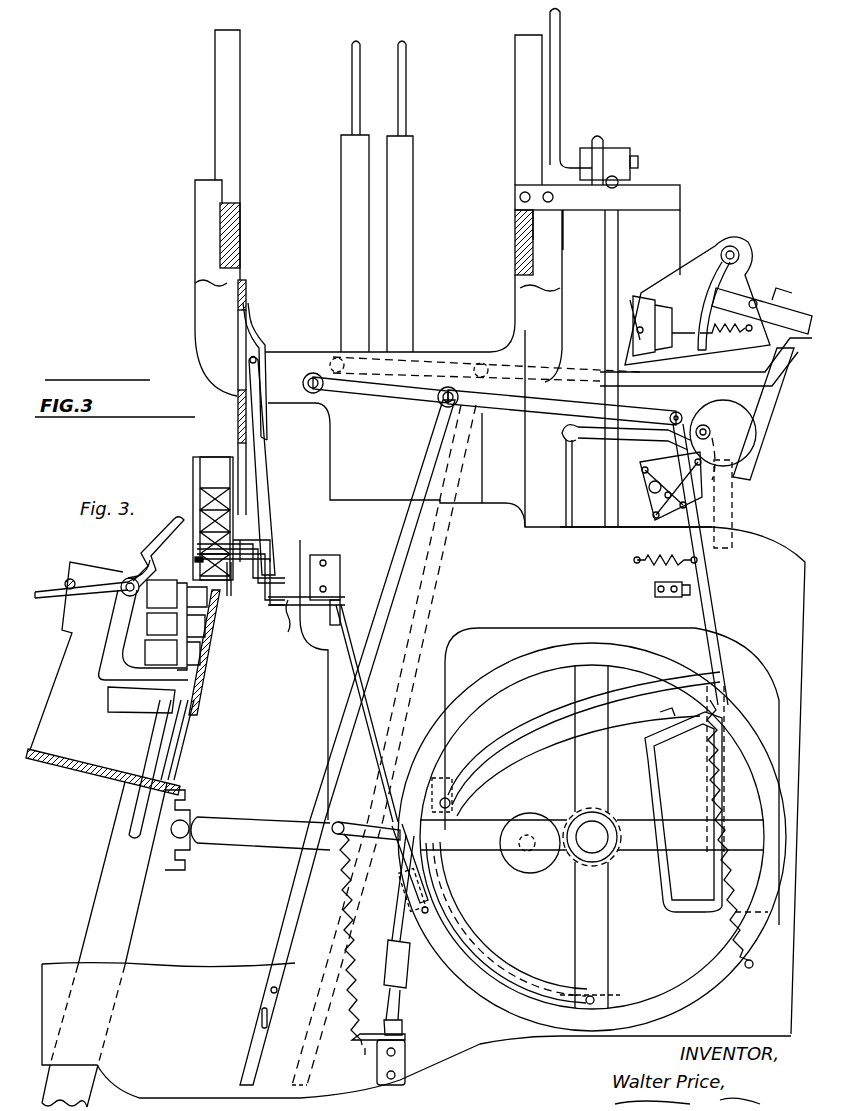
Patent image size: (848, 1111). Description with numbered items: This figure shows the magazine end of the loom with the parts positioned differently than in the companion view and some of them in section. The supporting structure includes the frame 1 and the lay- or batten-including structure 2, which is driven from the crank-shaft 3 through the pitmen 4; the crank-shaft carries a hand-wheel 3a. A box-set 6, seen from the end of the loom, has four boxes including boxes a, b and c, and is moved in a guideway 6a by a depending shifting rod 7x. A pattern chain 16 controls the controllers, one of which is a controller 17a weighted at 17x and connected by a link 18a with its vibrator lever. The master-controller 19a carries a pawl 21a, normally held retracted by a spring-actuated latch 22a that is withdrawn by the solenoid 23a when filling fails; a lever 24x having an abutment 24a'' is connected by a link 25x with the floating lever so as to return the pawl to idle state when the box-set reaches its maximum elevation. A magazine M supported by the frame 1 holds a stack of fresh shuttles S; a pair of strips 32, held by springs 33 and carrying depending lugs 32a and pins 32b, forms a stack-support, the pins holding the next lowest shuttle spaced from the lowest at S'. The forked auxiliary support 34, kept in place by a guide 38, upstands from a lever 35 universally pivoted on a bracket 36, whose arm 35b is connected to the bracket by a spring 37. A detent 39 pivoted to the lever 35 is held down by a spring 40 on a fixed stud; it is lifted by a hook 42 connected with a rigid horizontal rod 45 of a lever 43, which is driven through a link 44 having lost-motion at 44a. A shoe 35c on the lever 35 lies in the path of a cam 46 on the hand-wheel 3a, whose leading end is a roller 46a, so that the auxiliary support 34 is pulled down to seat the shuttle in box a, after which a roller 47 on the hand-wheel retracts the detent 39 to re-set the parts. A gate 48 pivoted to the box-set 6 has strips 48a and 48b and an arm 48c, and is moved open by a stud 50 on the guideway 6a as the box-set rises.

The frame 1 is at (328, 688).
The lay- or batten-including structure 2 is at (137, 918).
The crank-shaft 3 is at (606, 850).
The hand-wheel 3a is at (656, 995).
The pitmen 4 is at (260, 828).
The box-set 6 is at (198, 685).
The guideway 6a is at (188, 737).
The shifting rod 7x is at (152, 745).
The pattern chain 16 is at (645, 497).
The controller 17a is at (776, 392).
The weight 17x is at (757, 438).
The link 18a is at (566, 483).
The master-controller 19a is at (724, 242).
The pawl 21a is at (800, 310).
The latch 22a is at (720, 280).
The solenoid 23a is at (668, 332).
The abutment 24a'' is at (733, 339).
The lever 24x is at (604, 437).
The link 25x is at (392, 702).
The strips 32 is at (266, 492).
The depending lugs 32a is at (232, 598).
The pins 32b is at (250, 542).
The springs 33 is at (270, 418).
The auxiliary support 34 is at (287, 630).
The lever 35 is at (400, 920).
The arm 35b is at (366, 722).
The shoe 35c is at (448, 795).
The bracket 36 is at (406, 1047).
The spring 37 is at (347, 939).
The guide 38 is at (341, 576).
The detent 39 is at (545, 760).
The spring 40 is at (752, 962).
The hook 42 is at (712, 620).
The lever 43 is at (389, 384).
The link 44 is at (398, 608).
The lost-motion connection 44a is at (262, 1016).
The horizontal rod 45 is at (695, 408).
The cam 46 is at (520, 975).
The roller 46a is at (430, 890).
The roller 47 is at (536, 866).
The gate 48 is at (142, 556).
The strip 48a is at (151, 552).
The strip 48b is at (160, 673).
The arm 48c is at (48, 600).
The stud 50 is at (66, 580).
The magazine M is at (194, 468).
The solenoid S is at (201, 532).
The space S' is at (183, 555).
The box a is at (177, 625).
The box b is at (176, 626).
The contact c is at (172, 653).